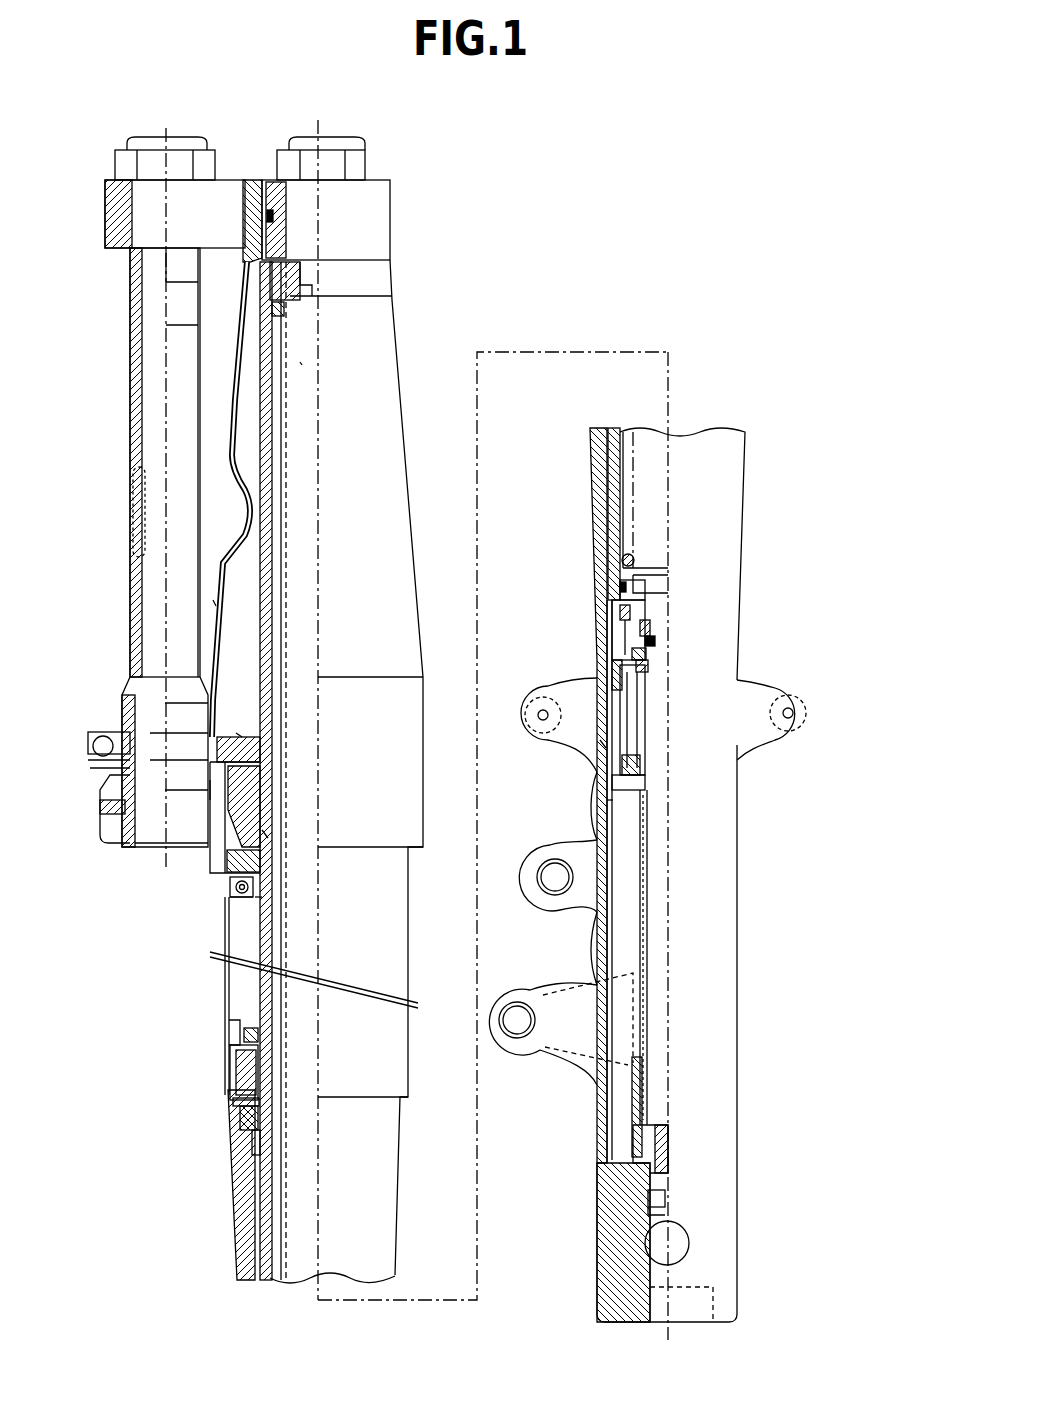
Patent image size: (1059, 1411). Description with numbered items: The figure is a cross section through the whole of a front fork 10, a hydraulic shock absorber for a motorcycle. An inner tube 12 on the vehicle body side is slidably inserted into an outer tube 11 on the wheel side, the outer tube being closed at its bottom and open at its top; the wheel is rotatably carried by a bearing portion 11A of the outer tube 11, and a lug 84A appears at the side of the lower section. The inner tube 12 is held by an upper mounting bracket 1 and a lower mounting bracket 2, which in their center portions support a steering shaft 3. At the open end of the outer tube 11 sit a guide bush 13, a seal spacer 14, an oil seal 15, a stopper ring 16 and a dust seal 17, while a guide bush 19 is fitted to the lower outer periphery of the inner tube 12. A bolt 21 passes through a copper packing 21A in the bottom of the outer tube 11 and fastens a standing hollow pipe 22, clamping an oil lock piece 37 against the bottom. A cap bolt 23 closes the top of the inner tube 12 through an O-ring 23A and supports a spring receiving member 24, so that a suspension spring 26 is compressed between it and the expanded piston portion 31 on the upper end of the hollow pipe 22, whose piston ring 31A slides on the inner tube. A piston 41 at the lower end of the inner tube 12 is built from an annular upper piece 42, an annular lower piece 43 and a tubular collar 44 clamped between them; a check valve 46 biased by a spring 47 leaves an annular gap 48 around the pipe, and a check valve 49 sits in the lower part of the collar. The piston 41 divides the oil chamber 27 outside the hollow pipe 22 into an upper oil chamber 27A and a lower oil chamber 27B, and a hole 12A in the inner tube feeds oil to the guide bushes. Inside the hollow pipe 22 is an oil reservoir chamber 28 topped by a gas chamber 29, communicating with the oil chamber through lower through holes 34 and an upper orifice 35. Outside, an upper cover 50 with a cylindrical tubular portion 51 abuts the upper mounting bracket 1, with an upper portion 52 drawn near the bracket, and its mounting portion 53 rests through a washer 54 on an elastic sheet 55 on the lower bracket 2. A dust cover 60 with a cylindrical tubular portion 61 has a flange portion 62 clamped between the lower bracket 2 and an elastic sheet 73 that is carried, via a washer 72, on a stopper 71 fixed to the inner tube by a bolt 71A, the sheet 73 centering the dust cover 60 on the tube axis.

The upper mounting bracket 1 is at (252, 205).
The lower mounting bracket 2 is at (232, 797).
The steering shaft 3 is at (132, 368).
The front fork 10 is at (662, 212).
The outer tube 11 is at (247, 1213).
The bearing portion 11A is at (678, 1240).
The inner tube 12 is at (260, 440).
The hole 12A is at (611, 686).
The guide bush 13 is at (238, 1112).
The seal spacer 14 is at (245, 1108).
The oil seal 15 is at (235, 1094).
The stopper ring 16 is at (235, 1058).
The dust seal 17 is at (245, 1030).
The guide bush 19 is at (602, 746).
The bolt 21 is at (648, 1218).
The copper packing 21A is at (650, 1202).
The hollow pipe 22 is at (644, 1072).
The cap bolt 23 is at (300, 195).
The O-ring 23A is at (282, 226).
The spring receiving member 24 is at (300, 298).
The suspension spring 26 is at (284, 308).
The oil chamber 27 is at (625, 926).
The upper oil chamber 27A is at (620, 614).
The lower oil chamber 27B is at (625, 957).
The oil reservoir chamber 28 is at (655, 1015).
The gas chamber 29 is at (300, 364).
The piston portion 31 is at (660, 576).
The piston ring 31A is at (622, 586).
The through holes 34 is at (645, 1042).
The orifice 35 is at (652, 644).
The oil lock piece 37 is at (636, 1103).
The piston 41 is at (632, 703).
The upper piece 42 is at (620, 644).
The lower piece 43 is at (612, 803).
The tubular collar 44 is at (641, 745).
The check valve 46 is at (646, 668).
The spring 47 is at (648, 628).
The annular gap 48 is at (645, 656).
The check valve 49 is at (640, 772).
The upper cover 50 is at (226, 546).
The cylindrical tubular portion 51 is at (213, 603).
The pipe upper portion 52 is at (240, 278).
The mounting portion 53 is at (240, 735).
The washer 54 is at (240, 806).
The sheet 55 is at (262, 750).
The dust cover 60 is at (222, 978).
The cylindrical tubular portion 61 is at (228, 1020).
The flange portion 62 is at (265, 837).
The stopper 71 is at (262, 905).
The bolt 71A is at (240, 898).
The washer 72 is at (256, 885).
The sheet 73 is at (258, 858).
The mounting lug 84A is at (776, 694).